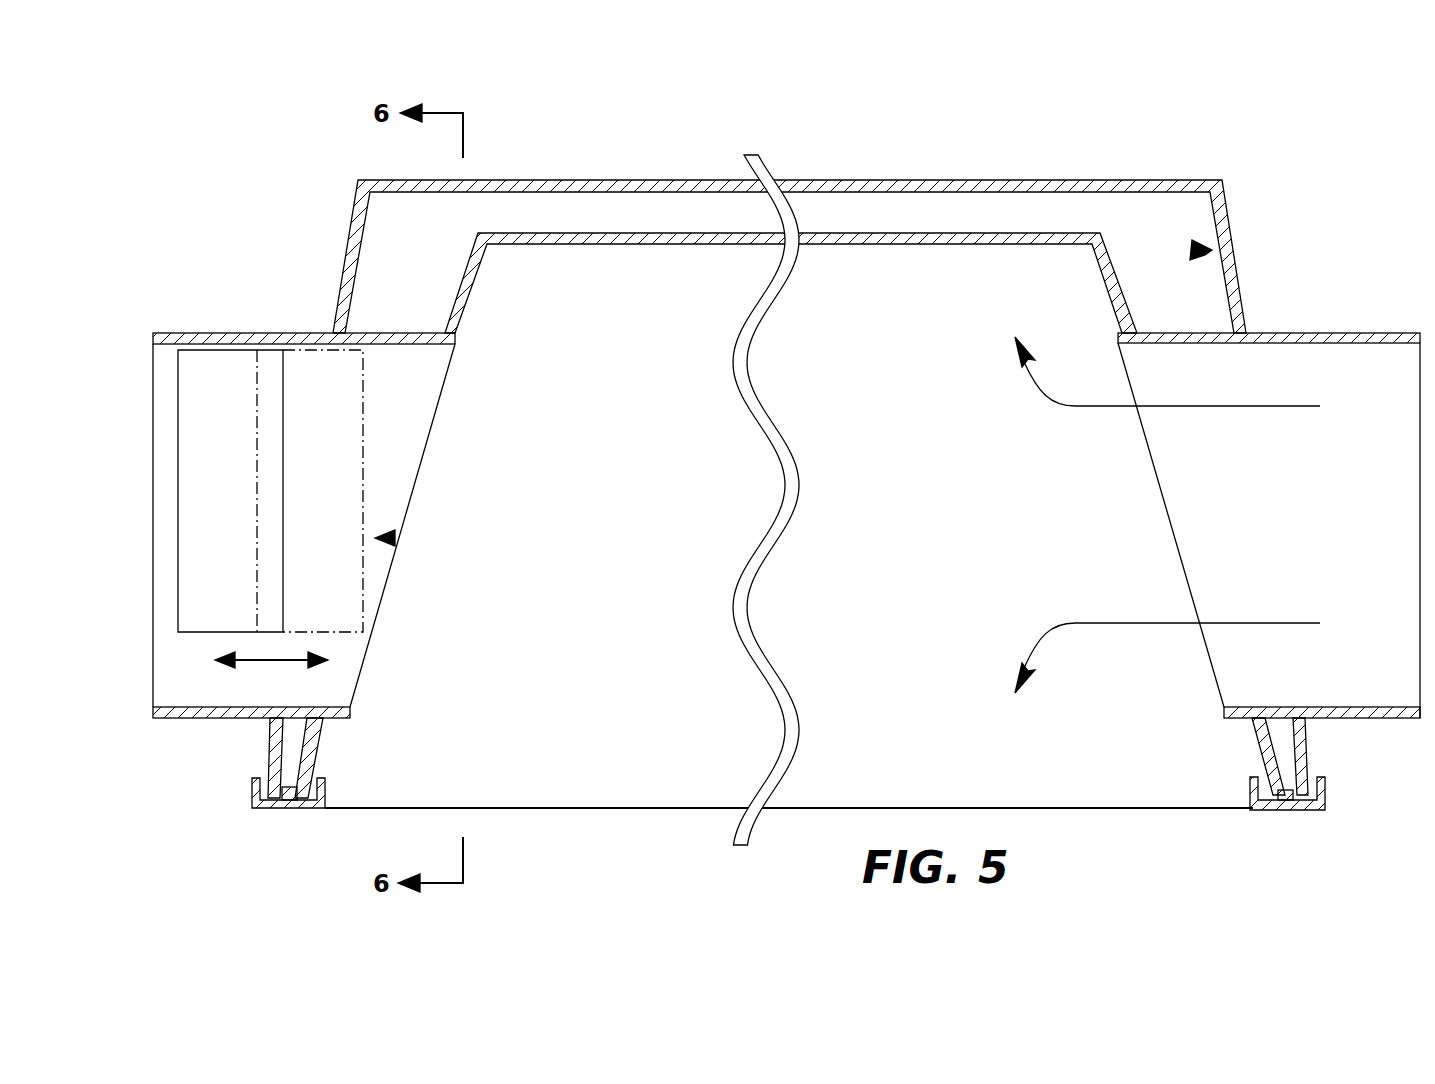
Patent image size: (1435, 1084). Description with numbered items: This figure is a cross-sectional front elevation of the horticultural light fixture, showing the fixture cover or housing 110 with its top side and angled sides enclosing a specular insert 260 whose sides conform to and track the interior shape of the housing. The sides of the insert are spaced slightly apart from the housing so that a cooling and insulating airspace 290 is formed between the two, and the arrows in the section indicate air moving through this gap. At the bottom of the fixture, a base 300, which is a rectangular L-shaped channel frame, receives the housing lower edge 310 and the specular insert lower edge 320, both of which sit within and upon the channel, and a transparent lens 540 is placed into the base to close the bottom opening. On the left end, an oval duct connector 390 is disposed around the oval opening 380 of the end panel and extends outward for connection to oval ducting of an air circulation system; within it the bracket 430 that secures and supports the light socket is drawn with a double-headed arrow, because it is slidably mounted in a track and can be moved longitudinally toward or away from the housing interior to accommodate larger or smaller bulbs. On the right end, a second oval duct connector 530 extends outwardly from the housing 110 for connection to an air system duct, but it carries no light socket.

The fixture cover or housing 110 is at (972, 180).
The specular insert 260 is at (838, 230).
The cooling and insulating airspace 290 is at (1196, 252).
The base 300 is at (1297, 808).
The housing lower edge 310 is at (270, 804).
The specular insert lower edge 320 is at (290, 802).
The oval opening 380 is at (390, 538).
The oval duct connector 390 is at (248, 332).
The bracket 430 is at (190, 492).
The oval duct connector 530 is at (1307, 333).
The transparent lens 540 is at (575, 809).